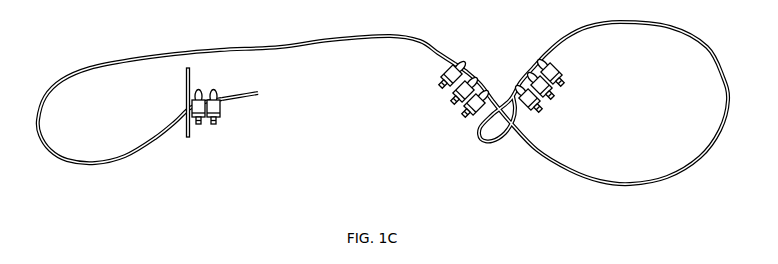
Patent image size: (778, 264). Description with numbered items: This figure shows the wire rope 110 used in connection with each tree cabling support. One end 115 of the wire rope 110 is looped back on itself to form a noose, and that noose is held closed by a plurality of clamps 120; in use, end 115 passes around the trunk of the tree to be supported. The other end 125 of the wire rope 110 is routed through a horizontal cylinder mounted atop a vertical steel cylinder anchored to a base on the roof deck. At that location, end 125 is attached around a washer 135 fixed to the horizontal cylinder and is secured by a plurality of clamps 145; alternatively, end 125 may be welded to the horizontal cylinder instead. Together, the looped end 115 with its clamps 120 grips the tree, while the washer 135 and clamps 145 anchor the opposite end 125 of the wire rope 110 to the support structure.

The wire rope 110 is at (297, 52).
The end of wire rope 115 is at (575, 174).
The clamps 120 is at (465, 113).
The other end of wire rope 125 is at (257, 97).
The washer 135 is at (186, 80).
The clamps 145 is at (215, 127).